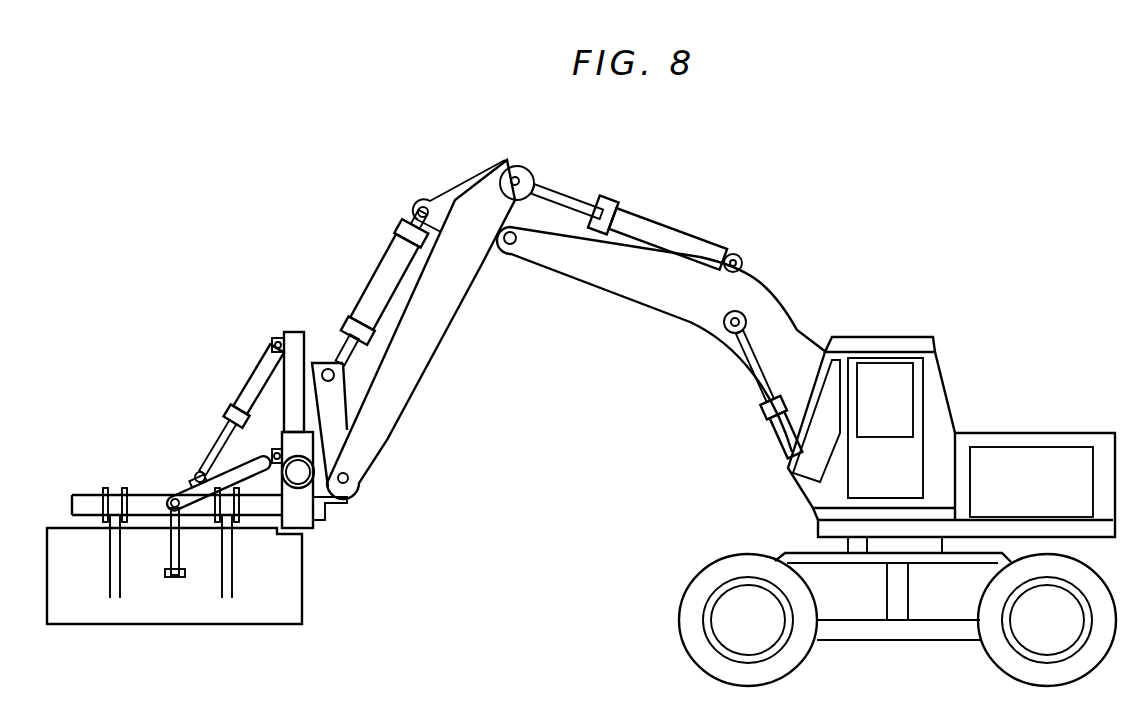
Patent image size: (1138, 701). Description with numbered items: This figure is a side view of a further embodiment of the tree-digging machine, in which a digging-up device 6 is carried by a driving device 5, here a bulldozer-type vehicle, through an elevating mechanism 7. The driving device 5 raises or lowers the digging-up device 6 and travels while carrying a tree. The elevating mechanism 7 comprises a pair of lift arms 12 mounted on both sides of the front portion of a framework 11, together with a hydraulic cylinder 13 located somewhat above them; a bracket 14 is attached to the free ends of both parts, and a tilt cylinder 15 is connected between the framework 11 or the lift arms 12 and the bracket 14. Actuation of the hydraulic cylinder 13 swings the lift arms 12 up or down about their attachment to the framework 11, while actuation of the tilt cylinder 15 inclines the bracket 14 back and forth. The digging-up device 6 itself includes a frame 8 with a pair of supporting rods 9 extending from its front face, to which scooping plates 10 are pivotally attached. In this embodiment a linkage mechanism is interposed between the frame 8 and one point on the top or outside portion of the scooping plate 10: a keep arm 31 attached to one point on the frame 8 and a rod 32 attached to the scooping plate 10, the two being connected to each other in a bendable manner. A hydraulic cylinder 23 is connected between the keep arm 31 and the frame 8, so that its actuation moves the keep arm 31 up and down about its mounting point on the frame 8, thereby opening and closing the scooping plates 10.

The driving device 5 is at (1007, 332).
The digging-up device 6 is at (64, 421).
The elevating mechanism 7 is at (546, 404).
The frame 8 is at (296, 338).
The supporting rods 9 is at (75, 503).
The scooping plates 10 is at (91, 600).
The framework 11 is at (1031, 440).
The lift arms 12 is at (410, 367).
The hydraulic cylinder 13 is at (635, 228).
The bracket 14 is at (333, 417).
The tilt cylinder 15 is at (382, 265).
The hydraulic cylinder 23 is at (246, 393).
The keep arm 31 is at (185, 492).
The rod 32 is at (170, 545).